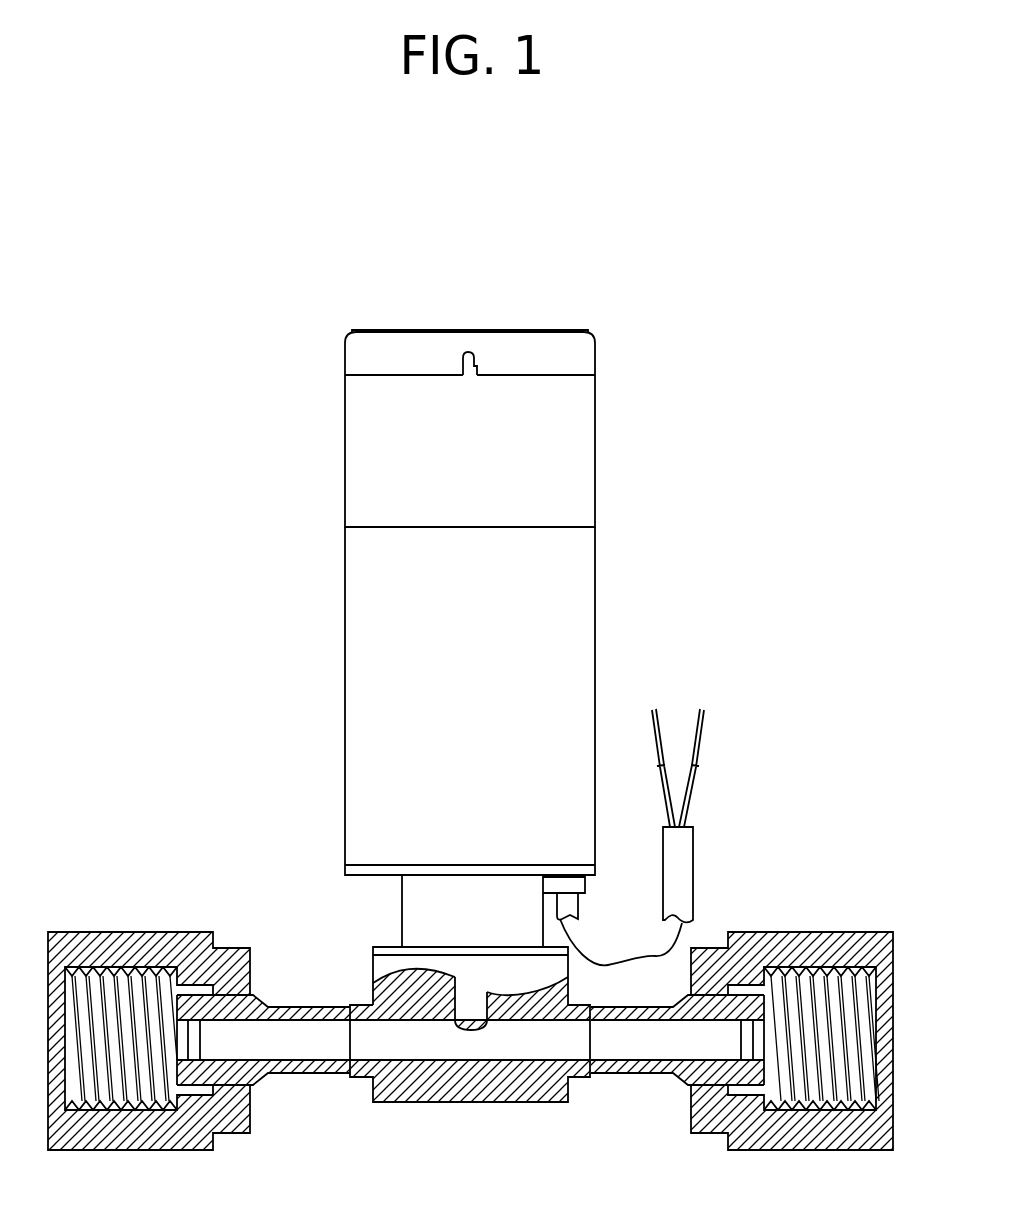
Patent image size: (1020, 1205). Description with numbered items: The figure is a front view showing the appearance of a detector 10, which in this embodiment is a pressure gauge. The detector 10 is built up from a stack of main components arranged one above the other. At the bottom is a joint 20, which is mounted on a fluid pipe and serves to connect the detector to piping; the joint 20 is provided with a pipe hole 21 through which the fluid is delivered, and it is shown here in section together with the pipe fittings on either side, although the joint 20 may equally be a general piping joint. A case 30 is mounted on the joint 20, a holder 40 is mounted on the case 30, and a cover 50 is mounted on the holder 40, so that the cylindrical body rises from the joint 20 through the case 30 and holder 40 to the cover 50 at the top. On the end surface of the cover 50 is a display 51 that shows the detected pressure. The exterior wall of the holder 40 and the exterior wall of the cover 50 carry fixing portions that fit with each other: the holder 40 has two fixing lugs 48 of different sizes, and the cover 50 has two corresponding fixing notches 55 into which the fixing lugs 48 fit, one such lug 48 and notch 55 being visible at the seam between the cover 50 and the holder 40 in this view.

The detector 10 is at (654, 218).
The joint 20 is at (556, 1098).
The pipe hole 21 is at (304, 1048).
The case 30 is at (587, 592).
The holder 40 is at (587, 457).
The fixing lug 48 is at (479, 366).
The cover 50 is at (587, 355).
The display 51 is at (392, 330).
The fixing notch 55 is at (468, 354).